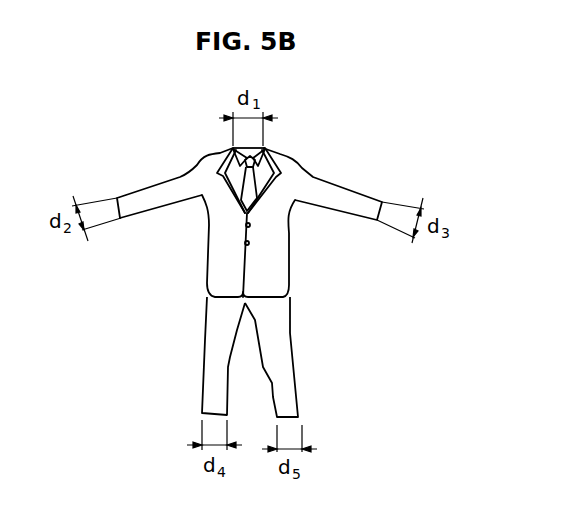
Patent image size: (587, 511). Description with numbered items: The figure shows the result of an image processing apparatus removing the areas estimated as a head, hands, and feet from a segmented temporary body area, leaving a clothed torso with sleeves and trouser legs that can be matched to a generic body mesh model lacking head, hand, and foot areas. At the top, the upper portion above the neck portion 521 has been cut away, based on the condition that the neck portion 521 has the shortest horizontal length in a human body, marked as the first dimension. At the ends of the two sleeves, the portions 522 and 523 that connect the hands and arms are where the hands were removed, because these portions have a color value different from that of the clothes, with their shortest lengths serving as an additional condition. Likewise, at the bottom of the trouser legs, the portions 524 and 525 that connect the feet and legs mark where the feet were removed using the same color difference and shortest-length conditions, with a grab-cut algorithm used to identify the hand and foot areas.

The neck portion 521 is at (253, 147).
The portion connecting hand and arm 522 is at (120, 218).
The portion connecting hand and arm 523 is at (383, 218).
The portion connecting foot and leg 524 is at (203, 418).
The portion connecting foot and leg 525 is at (296, 417).